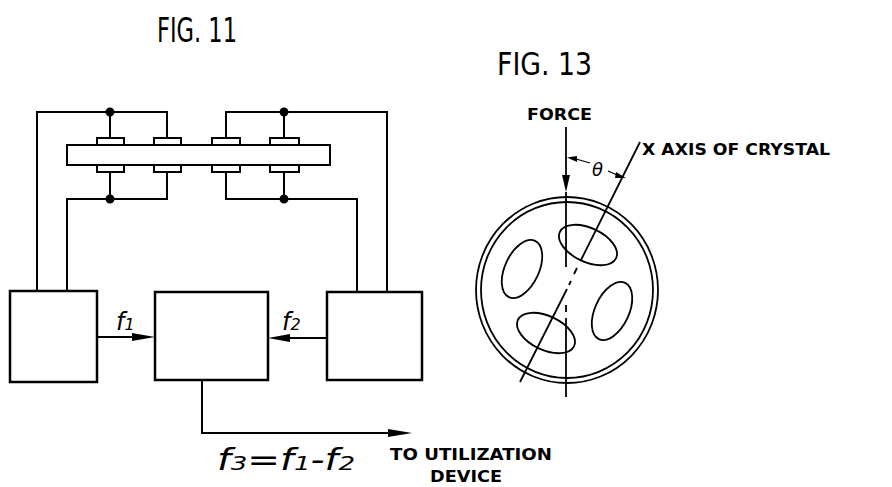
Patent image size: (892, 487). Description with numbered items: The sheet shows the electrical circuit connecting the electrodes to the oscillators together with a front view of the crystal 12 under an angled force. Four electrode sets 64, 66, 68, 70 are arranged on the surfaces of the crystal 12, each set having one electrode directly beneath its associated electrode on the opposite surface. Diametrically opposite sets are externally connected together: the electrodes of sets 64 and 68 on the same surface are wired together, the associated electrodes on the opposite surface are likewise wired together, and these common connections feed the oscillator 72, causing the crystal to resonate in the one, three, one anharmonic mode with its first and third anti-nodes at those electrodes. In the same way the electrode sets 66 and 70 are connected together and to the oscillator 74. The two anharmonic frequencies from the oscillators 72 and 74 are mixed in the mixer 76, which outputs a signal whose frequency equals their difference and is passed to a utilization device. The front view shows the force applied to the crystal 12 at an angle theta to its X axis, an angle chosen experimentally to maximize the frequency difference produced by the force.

In FIG. 11, the crystal 12 is at (322, 153).
In FIG. 13, the crystal 12 is at (535, 220).
In FIG. 11, the electrode set 64 is at (98, 172).
In FIG. 13, the electrode set 64 is at (612, 244).
In FIG. 11, the electrode set 66 is at (214, 173).
In FIG. 13, the electrode set 66 is at (623, 320).
In FIG. 11, the electrode set 68 is at (157, 172).
In FIG. 13, the electrode set 68 is at (550, 355).
In FIG. 11, the electrode set 70 is at (272, 173).
In FIG. 13, the electrode set 70 is at (507, 270).
In FIG. 11, the oscillator 72 is at (56, 372).
In FIG. 11, the oscillator 74 is at (402, 369).
In FIG. 11, the mixer 76 is at (252, 368).